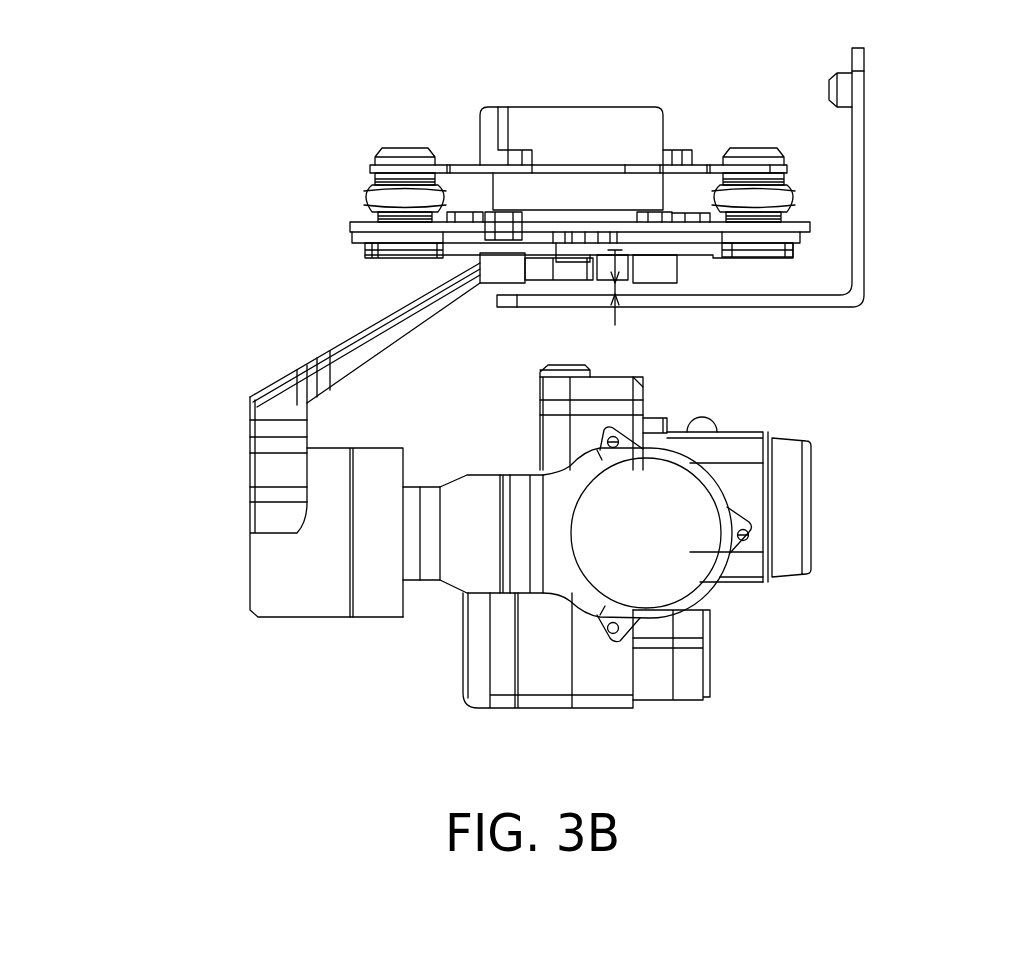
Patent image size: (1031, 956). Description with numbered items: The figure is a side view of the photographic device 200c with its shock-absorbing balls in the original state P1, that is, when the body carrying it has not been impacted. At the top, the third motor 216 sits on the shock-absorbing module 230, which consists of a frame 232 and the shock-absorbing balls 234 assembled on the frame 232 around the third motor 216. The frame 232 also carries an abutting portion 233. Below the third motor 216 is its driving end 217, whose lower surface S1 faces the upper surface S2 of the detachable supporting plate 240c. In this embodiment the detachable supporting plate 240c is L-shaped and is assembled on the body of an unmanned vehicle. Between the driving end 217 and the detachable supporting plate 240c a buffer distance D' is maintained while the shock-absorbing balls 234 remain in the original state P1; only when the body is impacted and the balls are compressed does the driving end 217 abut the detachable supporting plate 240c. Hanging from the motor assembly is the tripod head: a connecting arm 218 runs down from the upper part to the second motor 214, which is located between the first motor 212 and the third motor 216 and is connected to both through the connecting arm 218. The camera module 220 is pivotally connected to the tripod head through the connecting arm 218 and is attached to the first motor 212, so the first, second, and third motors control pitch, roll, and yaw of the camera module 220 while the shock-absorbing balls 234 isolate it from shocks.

The photographic device 200c is at (368, 122).
The third motor 216 is at (585, 122).
The shock-absorbing module 230 is at (208, 165).
The shock-absorbing ball 234 is at (370, 197).
The frame 232 is at (370, 250).
The abutting portion 233 is at (493, 272).
The driving end 217 is at (575, 270).
The lower surface S1 is at (544, 281).
The upper surface S2 is at (725, 284).
The buffer distance D' is at (637, 298).
The detachable supporting plate 240c is at (790, 300).
The connecting arm 218 is at (345, 357).
The second motor 214 is at (308, 612).
The first motor 212 is at (692, 568).
The camera module 220 is at (793, 512).
The original state P1 is at (997, 763).